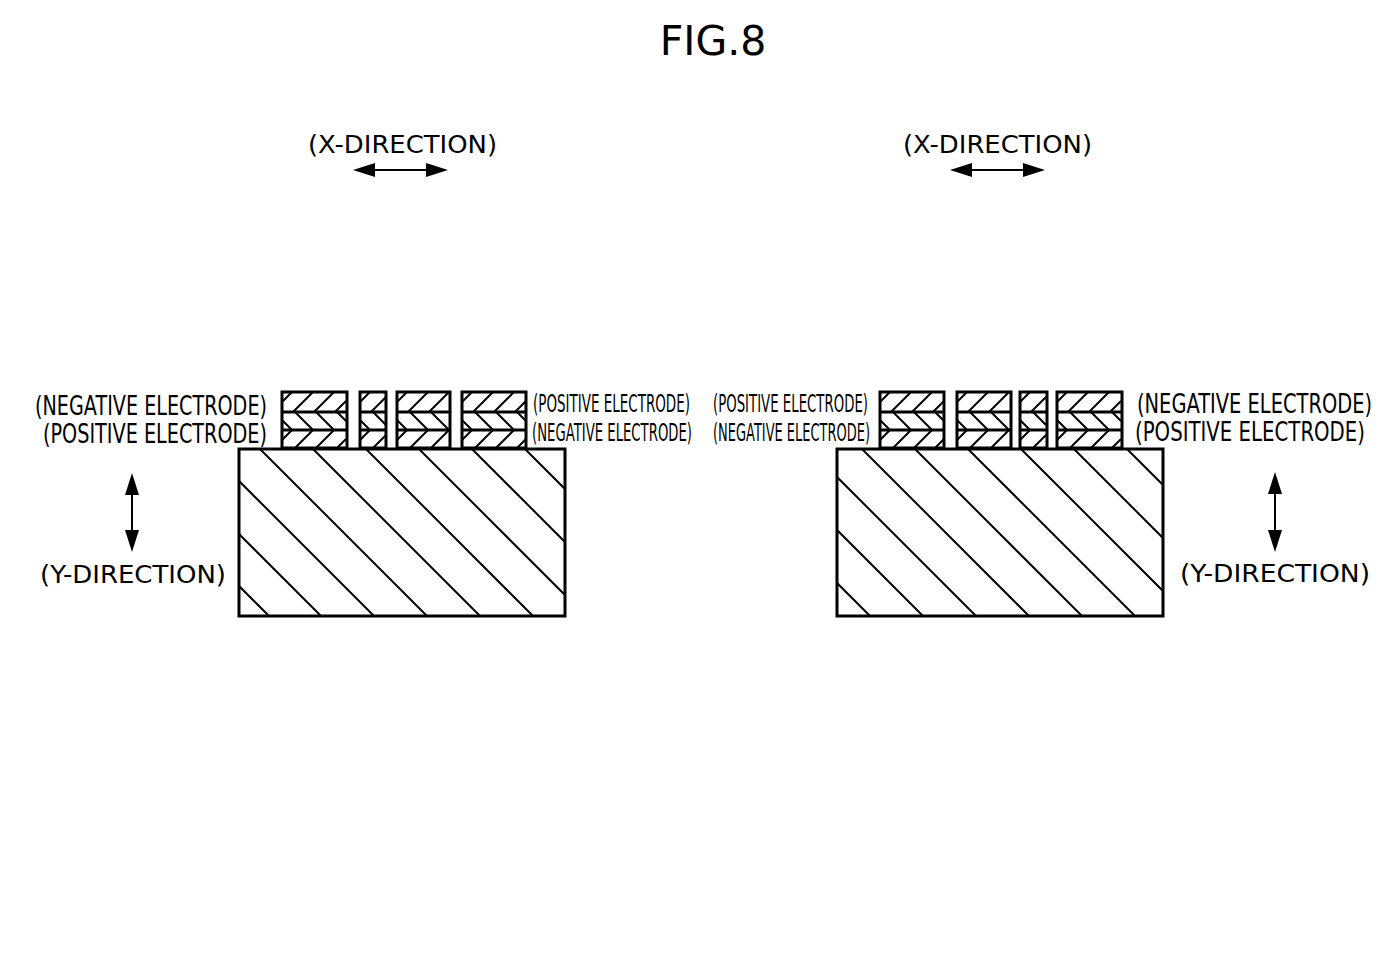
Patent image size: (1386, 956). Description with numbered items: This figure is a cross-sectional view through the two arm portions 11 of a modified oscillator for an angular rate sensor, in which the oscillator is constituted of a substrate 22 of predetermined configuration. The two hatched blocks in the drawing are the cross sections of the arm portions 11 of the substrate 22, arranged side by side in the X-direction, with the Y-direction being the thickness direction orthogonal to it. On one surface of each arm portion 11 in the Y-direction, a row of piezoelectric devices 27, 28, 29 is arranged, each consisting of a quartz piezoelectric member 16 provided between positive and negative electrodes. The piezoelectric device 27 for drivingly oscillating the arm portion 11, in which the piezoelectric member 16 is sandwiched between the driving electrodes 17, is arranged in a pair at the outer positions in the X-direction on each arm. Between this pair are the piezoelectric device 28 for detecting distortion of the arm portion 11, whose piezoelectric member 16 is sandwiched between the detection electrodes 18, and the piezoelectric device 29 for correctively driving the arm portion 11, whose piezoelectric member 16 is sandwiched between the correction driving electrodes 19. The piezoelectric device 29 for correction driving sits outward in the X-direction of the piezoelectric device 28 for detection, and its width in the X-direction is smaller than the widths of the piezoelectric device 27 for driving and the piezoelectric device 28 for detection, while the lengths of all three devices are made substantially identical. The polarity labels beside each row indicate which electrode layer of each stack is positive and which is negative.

The arm portion 11 is at (554, 632).
The piezoelectric member 16 is at (703, 349).
The driving electrode 17 is at (704, 340).
The detection electrode 18 is at (703, 340).
The correction driving electrode 19 is at (704, 363).
The substrate 22 is at (440, 600).
The piezoelectric device for driving 27 is at (705, 327).
The piezoelectric device for detection 28 is at (703, 327).
The piezoelectric device for correction driving 29 is at (704, 351).